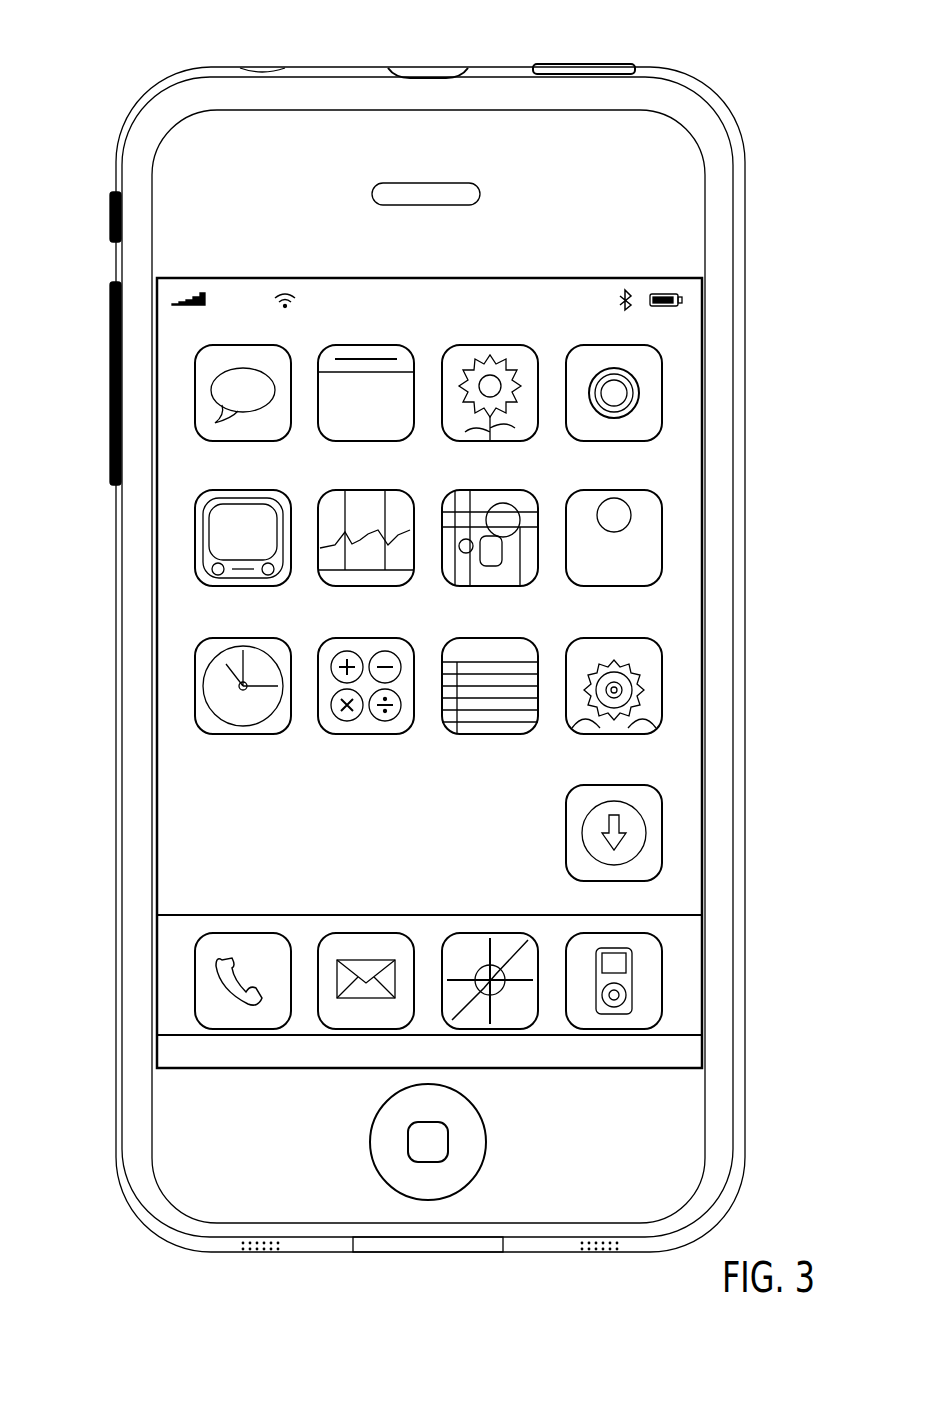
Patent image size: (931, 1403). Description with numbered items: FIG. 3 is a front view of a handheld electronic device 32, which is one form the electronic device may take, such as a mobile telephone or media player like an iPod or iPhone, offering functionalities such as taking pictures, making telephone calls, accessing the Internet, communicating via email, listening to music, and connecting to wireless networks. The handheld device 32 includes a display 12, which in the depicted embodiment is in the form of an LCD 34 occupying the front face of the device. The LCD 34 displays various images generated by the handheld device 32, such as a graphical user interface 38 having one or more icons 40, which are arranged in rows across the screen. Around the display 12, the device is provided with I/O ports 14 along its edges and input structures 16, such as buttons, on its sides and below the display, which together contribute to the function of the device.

The display 12 is at (678, 463).
The I/O ports 14 is at (258, 70).
The input structures 16 is at (618, 66).
The handheld electronic device 32 is at (213, 24).
The LCD 34 is at (693, 648).
The graphical user interface (GUI) 38 is at (190, 801).
The icons 40 is at (253, 345).